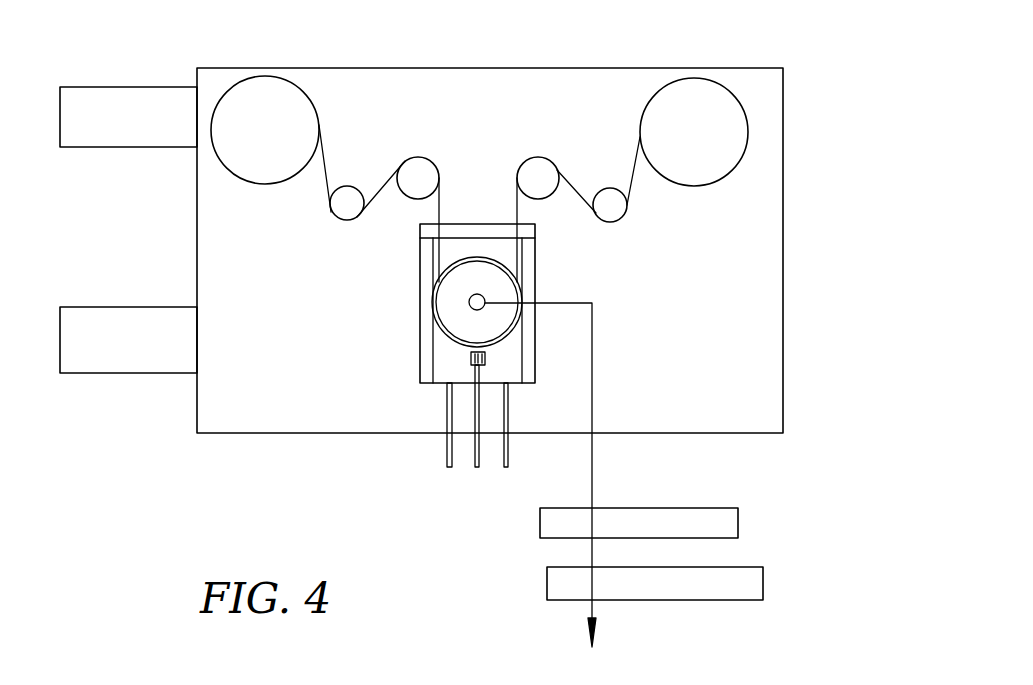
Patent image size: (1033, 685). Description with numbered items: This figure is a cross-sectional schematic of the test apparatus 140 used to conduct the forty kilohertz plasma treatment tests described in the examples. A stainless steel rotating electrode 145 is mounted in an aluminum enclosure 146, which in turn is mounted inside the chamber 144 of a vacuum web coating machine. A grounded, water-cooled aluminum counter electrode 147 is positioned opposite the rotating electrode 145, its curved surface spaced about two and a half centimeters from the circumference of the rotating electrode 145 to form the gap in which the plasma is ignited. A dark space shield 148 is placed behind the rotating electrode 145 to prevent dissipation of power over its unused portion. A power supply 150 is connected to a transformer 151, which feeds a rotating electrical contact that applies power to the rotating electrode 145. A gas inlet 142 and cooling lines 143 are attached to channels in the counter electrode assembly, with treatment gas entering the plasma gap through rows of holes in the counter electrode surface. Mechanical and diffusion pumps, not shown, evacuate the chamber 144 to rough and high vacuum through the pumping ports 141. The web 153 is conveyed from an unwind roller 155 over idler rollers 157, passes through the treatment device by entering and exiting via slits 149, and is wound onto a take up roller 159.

The test apparatus 140 is at (261, 450).
The pumping ports 141 is at (138, 85).
The gas inlet 142 is at (475, 470).
The cooling lines 143 is at (449, 443).
The chamber 144 is at (728, 424).
The rotating electrode 145 is at (505, 292).
The aluminum enclosure 146 is at (418, 292).
The counter electrode 147 is at (440, 381).
The dark space shield 148 is at (468, 243).
The slits 149 is at (438, 224).
The power supply 150 is at (763, 572).
The transformer 151 is at (738, 512).
The web 153 is at (327, 176).
The unwind roller 155 is at (277, 78).
The idler rollers 157 is at (418, 157).
The take up roller 159 is at (692, 88).